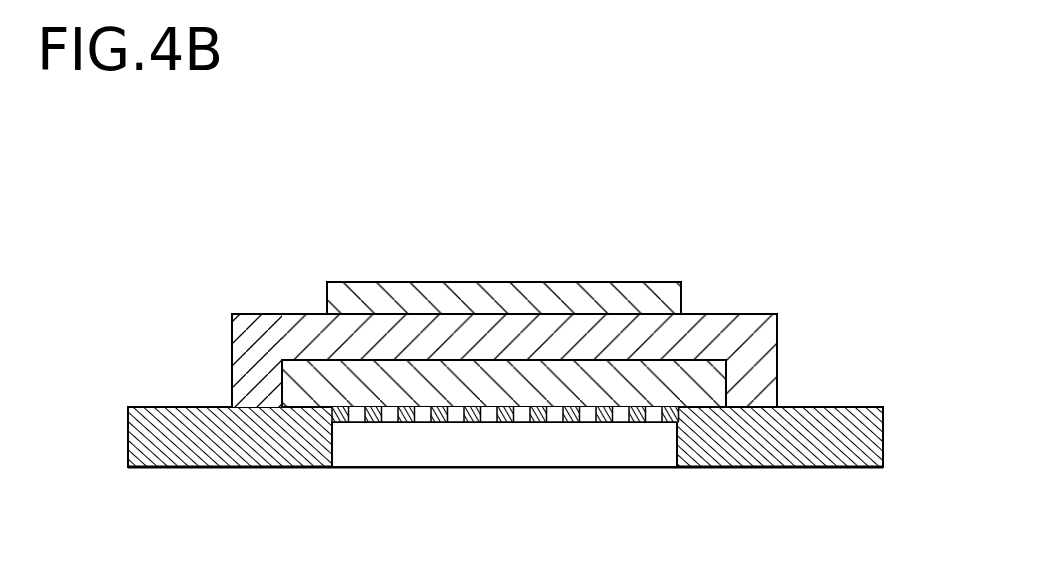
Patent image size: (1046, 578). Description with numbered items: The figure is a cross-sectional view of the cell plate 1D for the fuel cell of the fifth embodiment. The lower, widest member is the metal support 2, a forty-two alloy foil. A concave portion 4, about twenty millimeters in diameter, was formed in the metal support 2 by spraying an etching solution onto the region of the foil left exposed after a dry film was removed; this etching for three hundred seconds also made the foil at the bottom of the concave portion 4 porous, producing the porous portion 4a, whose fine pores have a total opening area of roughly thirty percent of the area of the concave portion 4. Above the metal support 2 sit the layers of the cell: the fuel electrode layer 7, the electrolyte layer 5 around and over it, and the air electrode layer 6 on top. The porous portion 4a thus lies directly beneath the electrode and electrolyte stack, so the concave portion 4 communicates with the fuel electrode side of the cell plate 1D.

The cell plate 1D is at (493, 196).
The metal support 2 is at (837, 407).
The concave portion 4 is at (441, 443).
The porous portion 4a is at (553, 417).
The electrolyte layer 5 is at (717, 313).
The air electrode layer 6 is at (585, 283).
The fuel electrode layer 7 is at (315, 377).